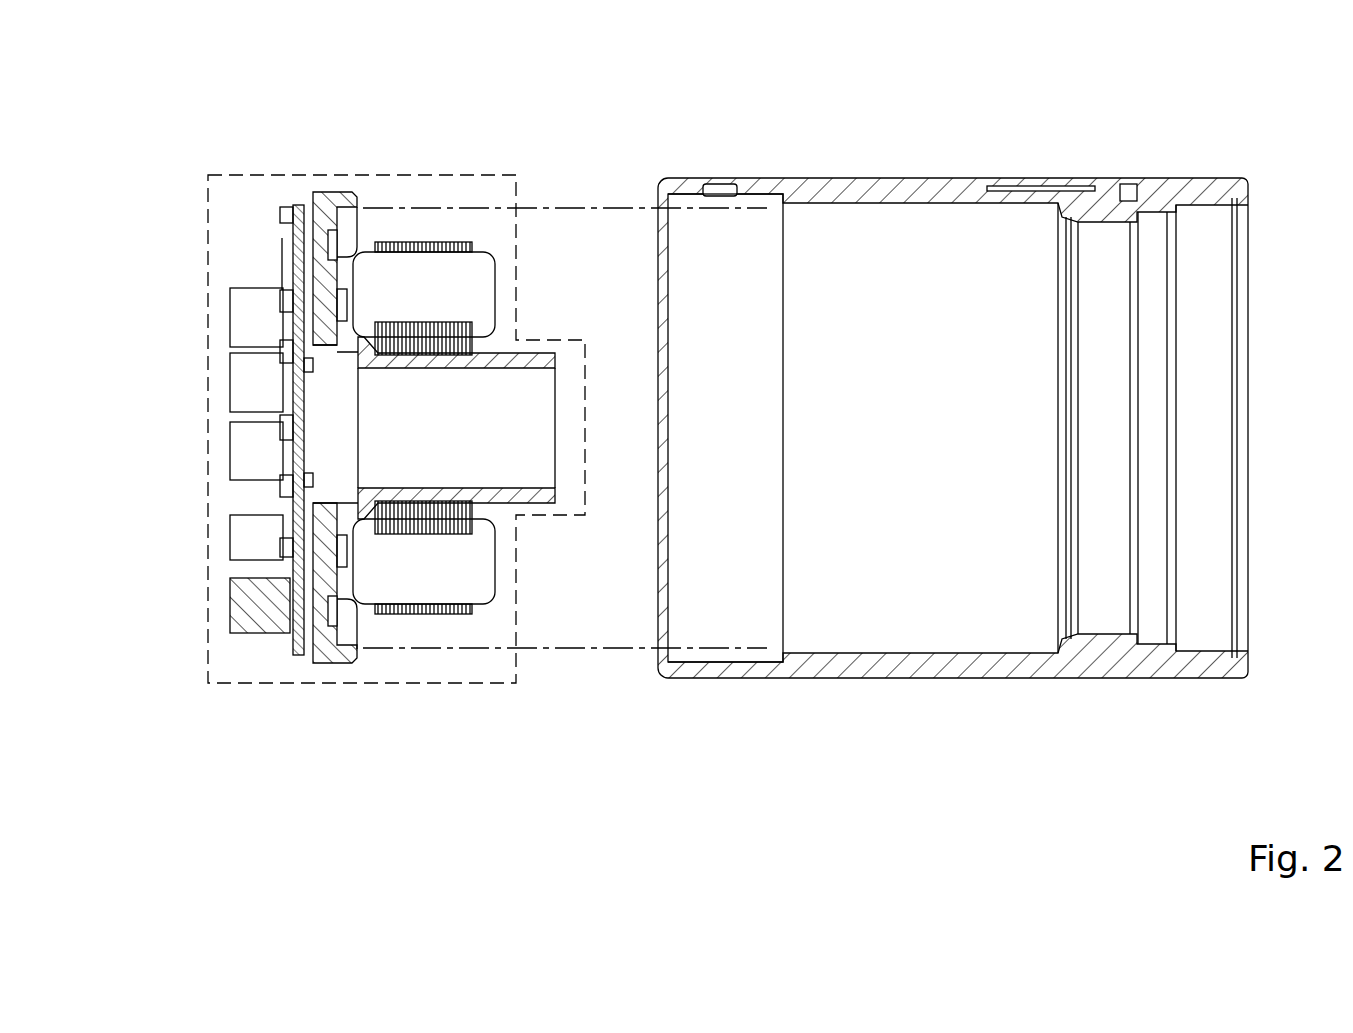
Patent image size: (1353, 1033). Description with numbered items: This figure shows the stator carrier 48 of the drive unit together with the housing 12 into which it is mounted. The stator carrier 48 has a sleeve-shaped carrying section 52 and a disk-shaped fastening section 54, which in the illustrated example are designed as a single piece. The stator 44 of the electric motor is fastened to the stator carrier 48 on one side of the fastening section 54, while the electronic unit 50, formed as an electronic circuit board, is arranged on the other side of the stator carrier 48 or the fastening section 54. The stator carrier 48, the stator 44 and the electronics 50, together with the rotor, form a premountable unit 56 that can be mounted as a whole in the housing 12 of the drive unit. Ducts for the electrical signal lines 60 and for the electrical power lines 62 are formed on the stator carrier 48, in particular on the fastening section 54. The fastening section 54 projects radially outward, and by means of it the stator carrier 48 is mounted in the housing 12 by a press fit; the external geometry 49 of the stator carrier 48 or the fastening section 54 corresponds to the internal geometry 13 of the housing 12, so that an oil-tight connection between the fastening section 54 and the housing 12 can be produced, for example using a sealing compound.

The housing 12 is at (968, 195).
The internal geometry 13 is at (747, 203).
The stator 44 is at (422, 283).
The stator carrier 48 is at (325, 275).
The external geometry 49 is at (329, 190).
The electronic unit 50 is at (268, 497).
The carrying section 52 is at (540, 353).
The fastening section 54 is at (318, 615).
The premountable unit 56 is at (468, 167).
The electrical signal lines 60 is at (338, 242).
The electrical power lines 62 is at (348, 555).